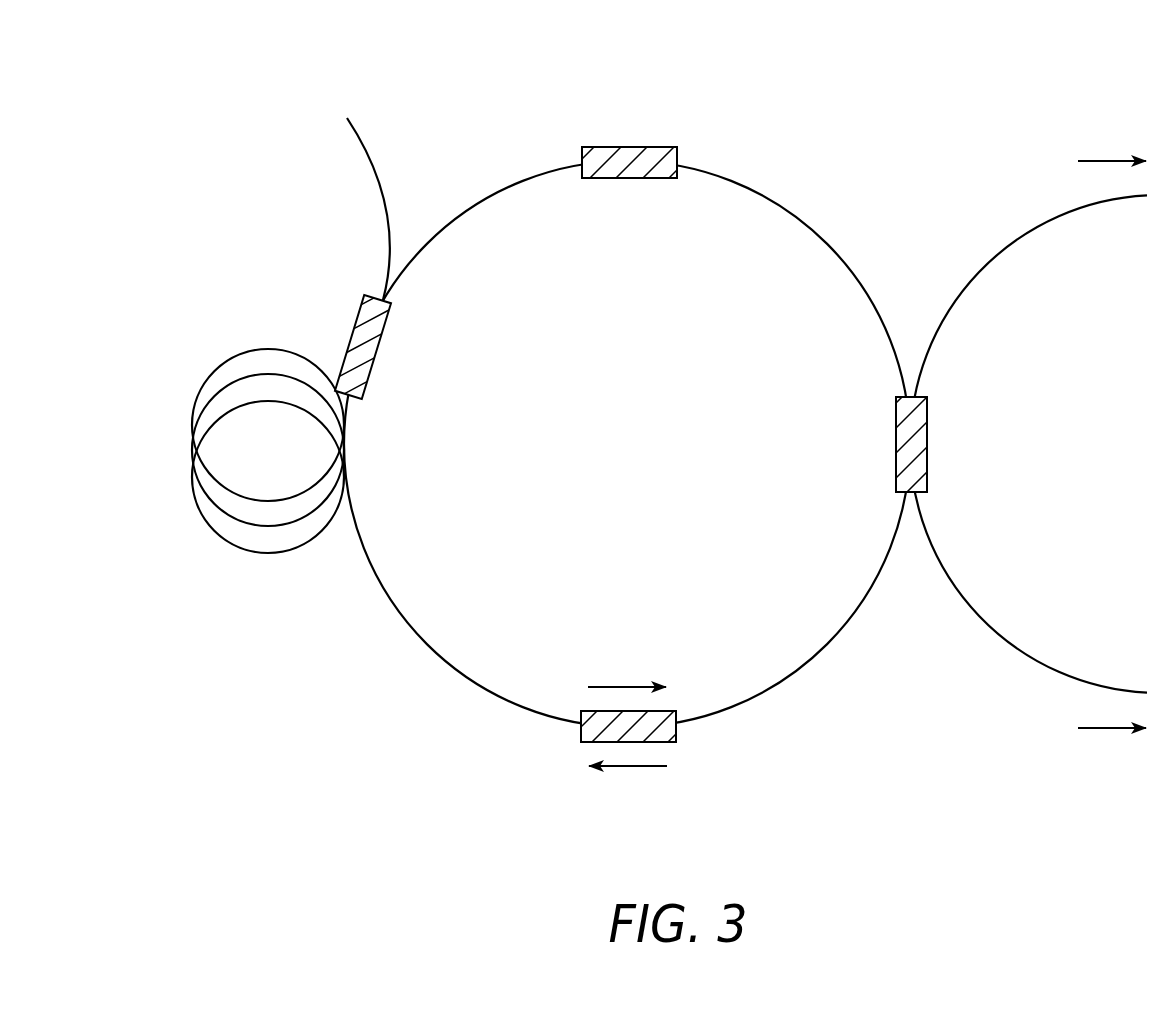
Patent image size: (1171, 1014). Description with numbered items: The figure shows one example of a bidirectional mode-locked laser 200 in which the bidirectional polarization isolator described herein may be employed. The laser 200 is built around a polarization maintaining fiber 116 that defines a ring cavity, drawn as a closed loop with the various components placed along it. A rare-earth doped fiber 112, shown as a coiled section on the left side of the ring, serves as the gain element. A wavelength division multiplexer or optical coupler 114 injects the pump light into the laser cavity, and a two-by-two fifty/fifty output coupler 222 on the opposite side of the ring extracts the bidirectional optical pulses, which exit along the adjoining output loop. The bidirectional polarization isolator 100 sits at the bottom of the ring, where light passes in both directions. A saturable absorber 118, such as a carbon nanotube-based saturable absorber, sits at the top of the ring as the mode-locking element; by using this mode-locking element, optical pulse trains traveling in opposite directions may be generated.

The bidirectional mode-locked laser 200 is at (466, 64).
The bidirectional polarization isolator 100 is at (668, 741).
The rare-earth doped fiber 112 is at (198, 500).
The optical coupler 114 is at (350, 311).
The polarization maintaining fiber 116 is at (786, 206).
The saturable absorber 118 is at (629, 178).
The output coupler 222 is at (896, 443).